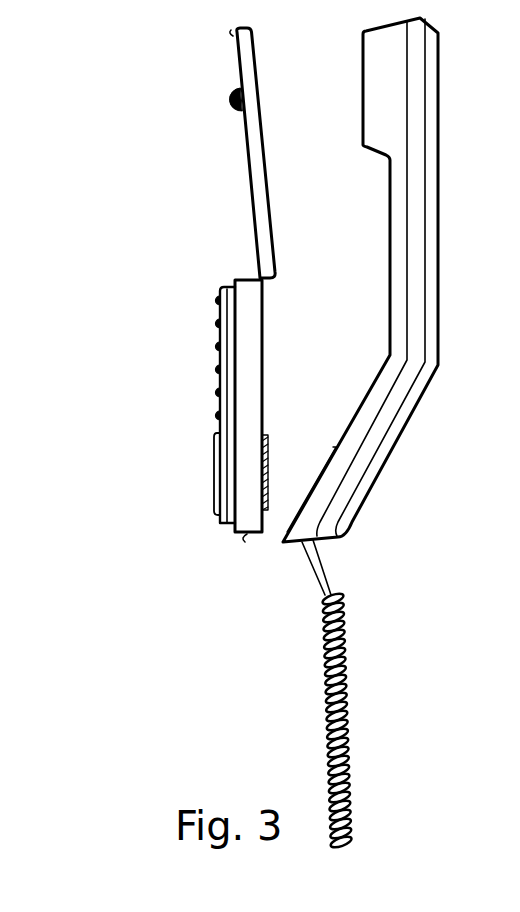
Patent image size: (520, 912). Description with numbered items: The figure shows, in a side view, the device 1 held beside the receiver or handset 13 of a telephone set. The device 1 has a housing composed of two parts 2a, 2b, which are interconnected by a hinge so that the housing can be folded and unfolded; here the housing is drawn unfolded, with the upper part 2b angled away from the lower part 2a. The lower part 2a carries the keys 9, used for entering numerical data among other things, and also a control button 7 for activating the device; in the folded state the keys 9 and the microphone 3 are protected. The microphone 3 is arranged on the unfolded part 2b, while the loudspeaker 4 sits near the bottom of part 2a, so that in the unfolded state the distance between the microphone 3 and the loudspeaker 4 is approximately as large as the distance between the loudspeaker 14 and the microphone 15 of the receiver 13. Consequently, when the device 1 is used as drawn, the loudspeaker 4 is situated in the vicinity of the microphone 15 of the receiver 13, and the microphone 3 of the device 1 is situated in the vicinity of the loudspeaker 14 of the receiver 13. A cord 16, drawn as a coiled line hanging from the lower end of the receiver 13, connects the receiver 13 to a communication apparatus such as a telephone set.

The device 1 is at (182, 257).
The housing part 2a is at (245, 535).
The housing part 2b is at (247, 197).
The microphone 3 is at (231, 99).
The loudspeaker 4 is at (269, 441).
The control button 7 is at (217, 476).
The keys 9 is at (219, 333).
The receiver 13 is at (441, 195).
The loudspeaker 14 is at (361, 90).
The microphone 15 is at (302, 492).
The cord 16 is at (353, 786).